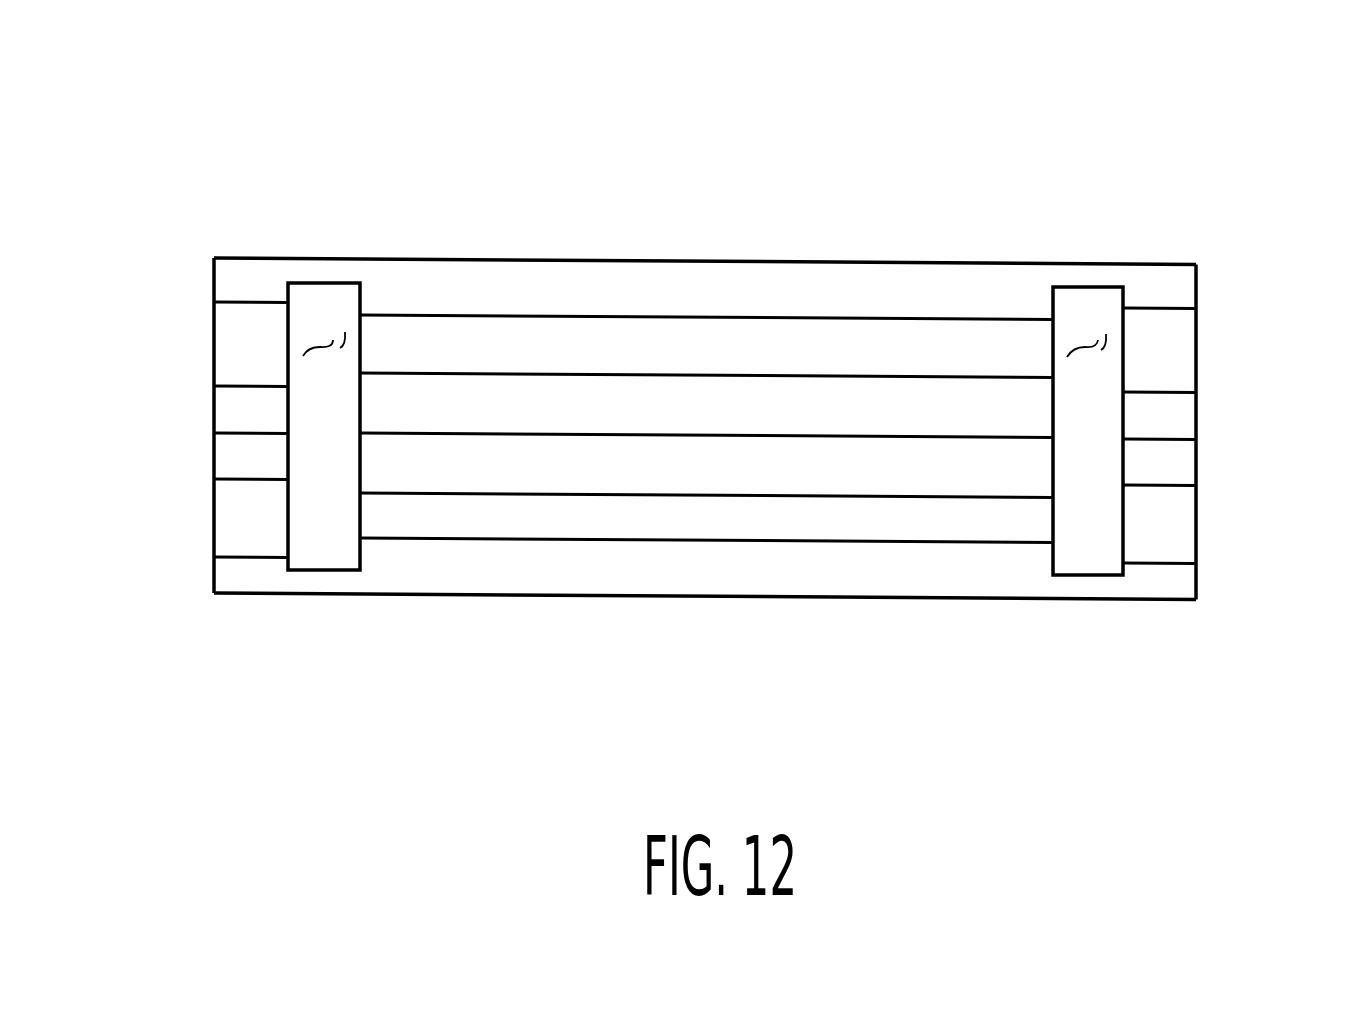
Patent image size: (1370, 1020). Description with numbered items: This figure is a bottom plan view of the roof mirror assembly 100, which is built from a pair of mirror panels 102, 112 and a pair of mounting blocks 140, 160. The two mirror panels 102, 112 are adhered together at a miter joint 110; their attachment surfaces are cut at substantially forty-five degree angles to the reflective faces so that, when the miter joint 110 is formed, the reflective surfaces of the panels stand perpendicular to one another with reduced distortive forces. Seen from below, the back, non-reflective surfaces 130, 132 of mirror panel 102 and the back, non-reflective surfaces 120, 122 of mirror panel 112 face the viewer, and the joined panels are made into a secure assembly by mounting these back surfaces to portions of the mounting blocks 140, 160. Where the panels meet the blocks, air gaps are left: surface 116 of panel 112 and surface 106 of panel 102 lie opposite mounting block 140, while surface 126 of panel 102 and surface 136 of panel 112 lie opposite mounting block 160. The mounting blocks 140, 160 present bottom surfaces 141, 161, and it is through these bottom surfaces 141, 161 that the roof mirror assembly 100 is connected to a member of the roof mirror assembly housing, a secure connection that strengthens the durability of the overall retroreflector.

The roof mirror assembly 100 is at (284, 82).
The mirror panel 102 is at (1194, 607).
The surface 106 is at (1172, 528).
The miter joint 110 is at (818, 433).
The mirror panel 112 is at (1202, 265).
The surface 116 is at (1177, 348).
The back, non-reflective surface 120 is at (485, 340).
The back, non-reflective surface 122 is at (683, 283).
The surface 126 is at (233, 527).
The back, non-reflective surface 130 is at (450, 517).
The back, non-reflective surface 132 is at (833, 577).
The surface 136 is at (233, 342).
The mounting block 140 is at (1090, 582).
The bottom surface 141 is at (1098, 340).
The mounting block 160 is at (327, 576).
The bottom surface 161 is at (333, 340).